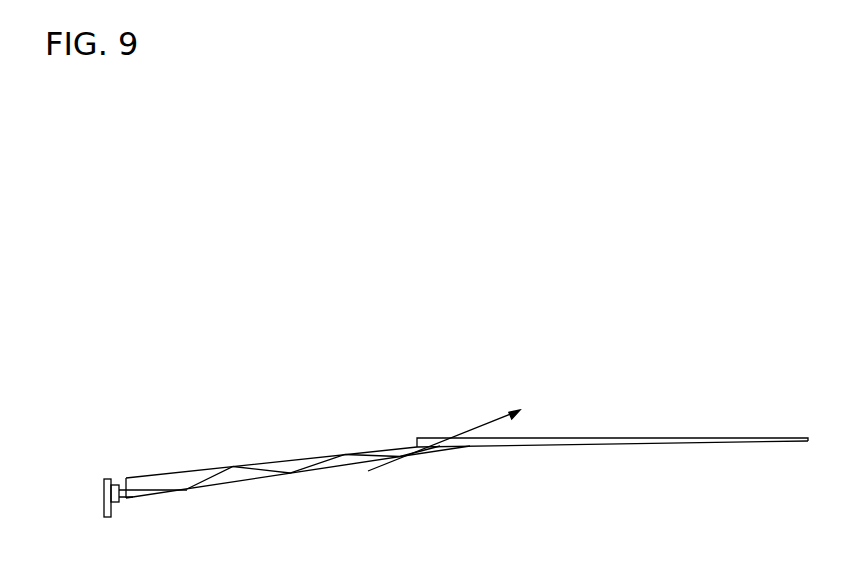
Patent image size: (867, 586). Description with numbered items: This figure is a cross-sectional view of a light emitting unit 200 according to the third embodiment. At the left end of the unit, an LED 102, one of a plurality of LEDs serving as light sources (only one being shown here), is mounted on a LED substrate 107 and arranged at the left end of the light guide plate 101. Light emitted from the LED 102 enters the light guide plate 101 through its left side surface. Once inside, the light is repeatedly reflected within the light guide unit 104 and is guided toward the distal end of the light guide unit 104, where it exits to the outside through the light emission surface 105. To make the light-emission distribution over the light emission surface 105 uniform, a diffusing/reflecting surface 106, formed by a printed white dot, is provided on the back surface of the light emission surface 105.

The light emitting unit 200 is at (142, 294).
The light guide plate 101 is at (273, 461).
The LED 102 is at (123, 484).
The light guide unit 104 is at (234, 483).
The light emission surface 105 is at (600, 438).
The diffusing/reflecting surface 106 is at (633, 447).
The LED substrate 107 is at (104, 512).